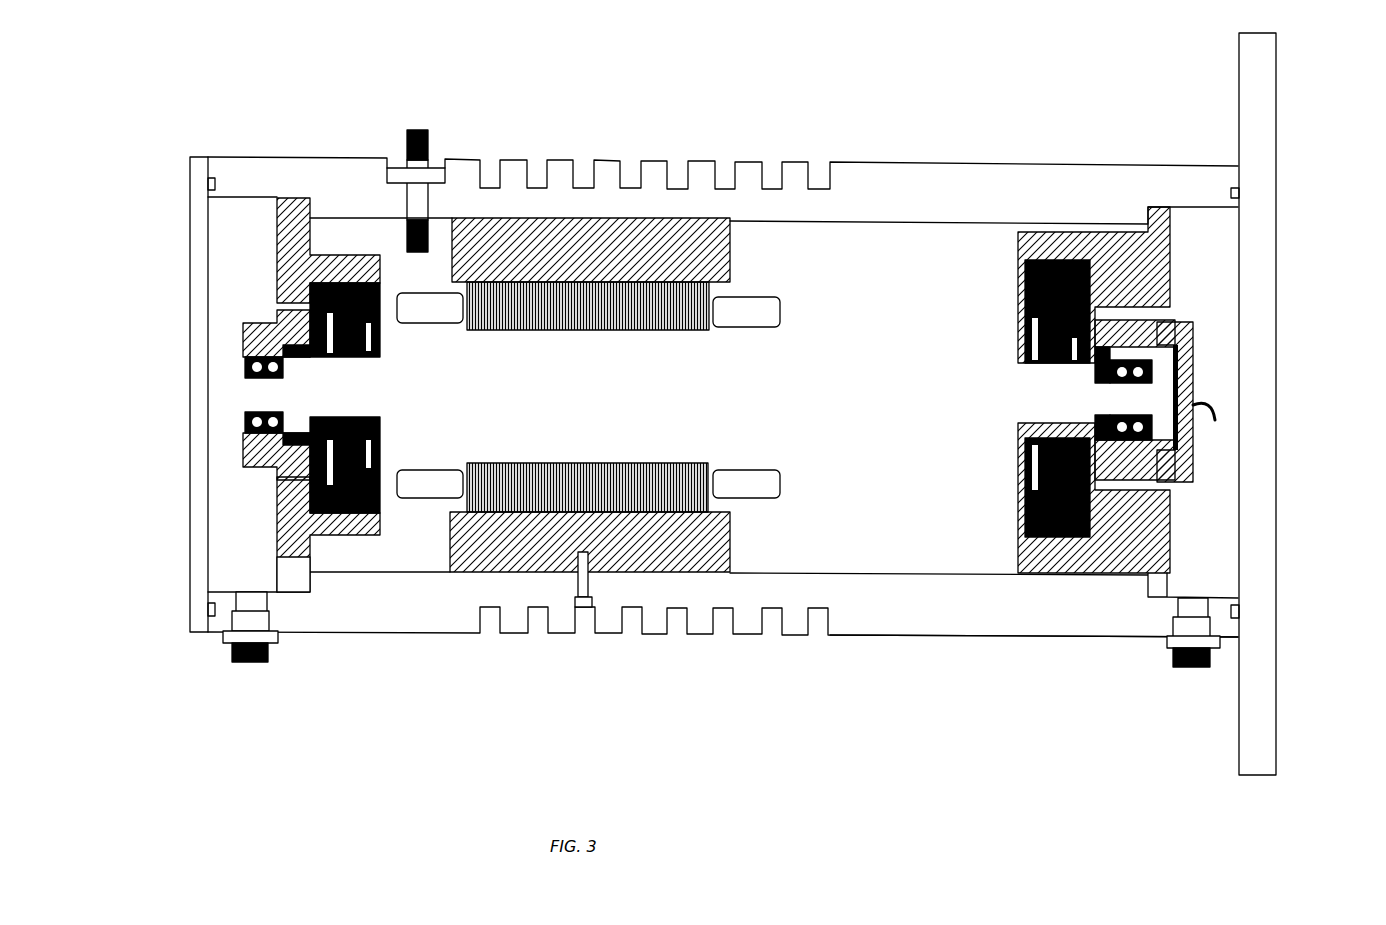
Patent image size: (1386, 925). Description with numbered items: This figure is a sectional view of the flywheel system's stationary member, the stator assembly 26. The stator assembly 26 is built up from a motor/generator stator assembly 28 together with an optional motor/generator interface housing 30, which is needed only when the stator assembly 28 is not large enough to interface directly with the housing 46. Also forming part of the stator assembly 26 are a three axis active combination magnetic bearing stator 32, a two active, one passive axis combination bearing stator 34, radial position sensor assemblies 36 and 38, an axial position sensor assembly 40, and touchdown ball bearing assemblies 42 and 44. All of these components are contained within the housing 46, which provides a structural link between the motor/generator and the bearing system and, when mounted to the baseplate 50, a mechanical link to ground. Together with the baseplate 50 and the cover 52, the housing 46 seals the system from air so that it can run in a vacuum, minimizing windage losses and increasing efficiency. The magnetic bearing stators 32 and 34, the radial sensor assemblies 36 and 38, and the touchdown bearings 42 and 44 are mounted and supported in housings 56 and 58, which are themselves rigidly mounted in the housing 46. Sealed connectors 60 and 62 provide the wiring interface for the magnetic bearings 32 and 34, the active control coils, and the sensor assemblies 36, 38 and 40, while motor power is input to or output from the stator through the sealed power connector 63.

The stator assembly 26 is at (681, 620).
The motor/generator stator assembly 28 is at (492, 512).
The motor/generator interface housing 30 is at (550, 560).
The three axis active combination magnetic bearing stator 32 is at (1062, 262).
The two active, one passive axis combination bearing stator 34 is at (337, 510).
The radial position sensor assembly 36 is at (1140, 315).
The radial position sensor assembly 38 is at (273, 462).
The axial position sensor assembly 40 is at (1195, 447).
The touchdown ball bearing assembly 42 is at (1195, 367).
The touchdown ball bearing assembly 44 is at (245, 428).
The housing 46 is at (1000, 608).
The baseplate 50 is at (1258, 190).
The cover 52 is at (200, 215).
The housing 56 is at (290, 248).
The housing 58 is at (1148, 520).
The sealed connector 60 is at (250, 665).
The sealed connector 62 is at (1198, 668).
The sealed power connector 63 is at (412, 130).